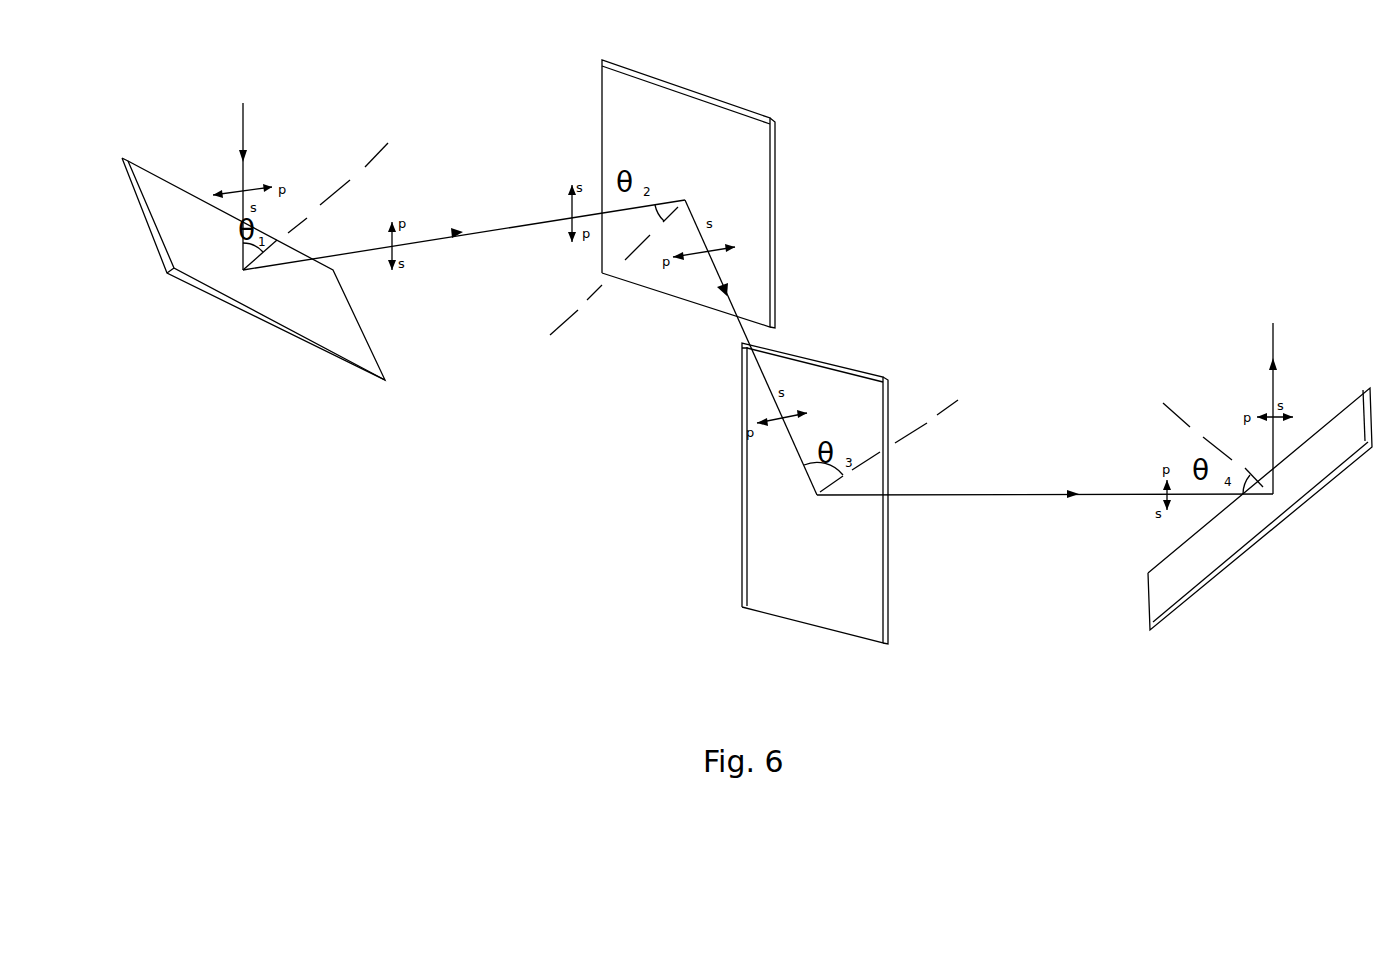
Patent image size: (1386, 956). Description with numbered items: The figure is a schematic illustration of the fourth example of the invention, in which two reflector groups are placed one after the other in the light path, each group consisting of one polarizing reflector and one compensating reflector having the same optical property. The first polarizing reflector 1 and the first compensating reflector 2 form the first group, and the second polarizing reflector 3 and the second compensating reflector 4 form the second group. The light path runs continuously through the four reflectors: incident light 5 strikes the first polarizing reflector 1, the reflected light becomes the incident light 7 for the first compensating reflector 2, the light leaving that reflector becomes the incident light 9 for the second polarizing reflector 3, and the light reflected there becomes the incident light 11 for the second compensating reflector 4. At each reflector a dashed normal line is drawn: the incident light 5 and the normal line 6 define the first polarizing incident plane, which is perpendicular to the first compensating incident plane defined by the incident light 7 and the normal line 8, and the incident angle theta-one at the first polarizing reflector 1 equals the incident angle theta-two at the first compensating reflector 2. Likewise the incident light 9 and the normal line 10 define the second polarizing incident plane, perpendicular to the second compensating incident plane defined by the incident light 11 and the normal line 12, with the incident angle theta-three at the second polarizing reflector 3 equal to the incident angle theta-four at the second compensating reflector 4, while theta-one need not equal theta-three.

The first polarizing reflector 1 is at (253, 252).
The first compensating reflector 2 is at (666, 194).
The second polarizing reflector 3 is at (844, 493).
The second compensating reflector 4 is at (1227, 509).
The incident light 5 is at (261, 186).
The normal line 6 is at (315, 193).
The incident light 7 is at (464, 235).
The normal line 8 is at (614, 271).
The incident light 9 is at (751, 347).
The normal line 10 is at (889, 433).
The incident light 11 is at (1045, 514).
The normal line 12 is at (1169, 419).